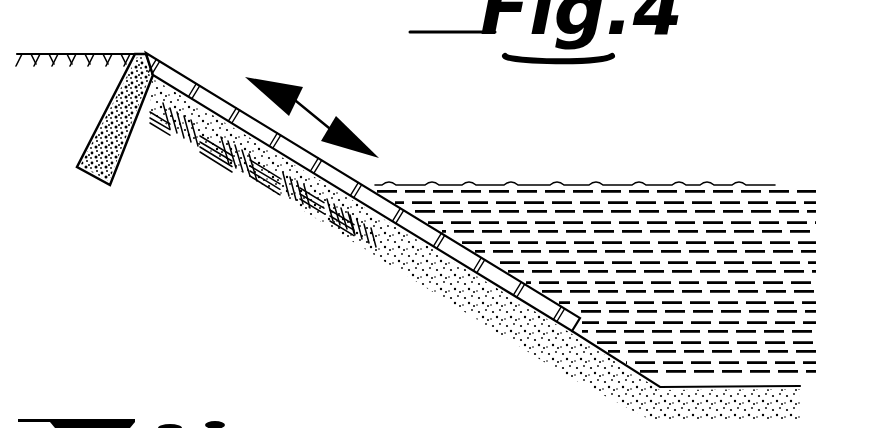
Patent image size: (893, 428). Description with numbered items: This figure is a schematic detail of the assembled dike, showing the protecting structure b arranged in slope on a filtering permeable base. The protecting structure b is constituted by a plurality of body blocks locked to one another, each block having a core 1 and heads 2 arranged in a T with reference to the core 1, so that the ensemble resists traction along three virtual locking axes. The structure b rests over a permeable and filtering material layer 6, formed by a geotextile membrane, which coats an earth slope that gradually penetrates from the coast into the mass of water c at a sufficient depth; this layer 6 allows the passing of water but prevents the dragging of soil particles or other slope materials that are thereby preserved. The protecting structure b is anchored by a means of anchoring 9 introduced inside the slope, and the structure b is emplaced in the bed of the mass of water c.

The core of block 1 is at (184, 76).
The heads of block 2 is at (73, 52).
The permeable and filtering material layer 6 is at (262, 178).
The anchor of structure 9 is at (123, 157).
The protecting structure b is at (226, 92).
The mass of water c is at (616, 180).